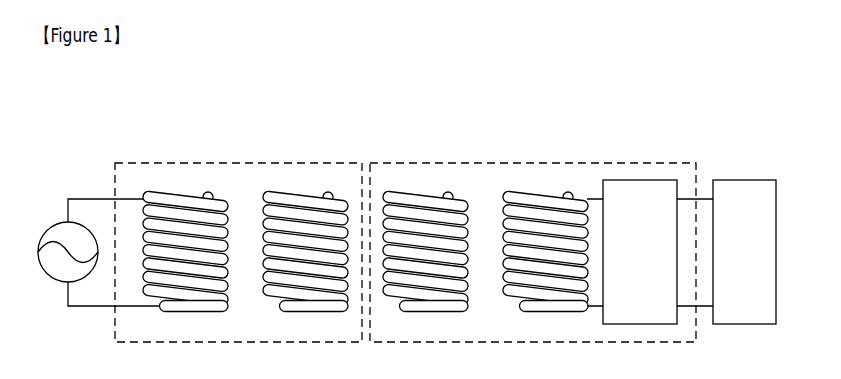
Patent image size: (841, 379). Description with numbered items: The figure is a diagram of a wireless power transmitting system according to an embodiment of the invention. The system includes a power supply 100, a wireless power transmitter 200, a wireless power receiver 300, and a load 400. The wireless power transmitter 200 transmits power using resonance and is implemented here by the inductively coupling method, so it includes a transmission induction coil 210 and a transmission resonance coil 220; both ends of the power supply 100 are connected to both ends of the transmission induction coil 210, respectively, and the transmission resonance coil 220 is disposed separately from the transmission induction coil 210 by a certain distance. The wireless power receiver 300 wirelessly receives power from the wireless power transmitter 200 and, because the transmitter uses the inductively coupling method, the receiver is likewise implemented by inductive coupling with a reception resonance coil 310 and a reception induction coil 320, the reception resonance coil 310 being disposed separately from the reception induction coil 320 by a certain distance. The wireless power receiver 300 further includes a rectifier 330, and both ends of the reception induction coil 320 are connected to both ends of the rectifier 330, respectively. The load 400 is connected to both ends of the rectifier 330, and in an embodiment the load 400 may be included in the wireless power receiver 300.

The power supply 100 is at (42, 228).
The wireless power transmitter 200 is at (136, 162).
The transmission induction coil 210 is at (198, 207).
The transmission resonance coil 220 is at (305, 218).
The wireless power receiver 300 is at (470, 161).
The reception resonance coil 310 is at (425, 216).
The reception induction coil 320 is at (553, 217).
The rectifier 330 is at (643, 180).
The load 400 is at (745, 180).